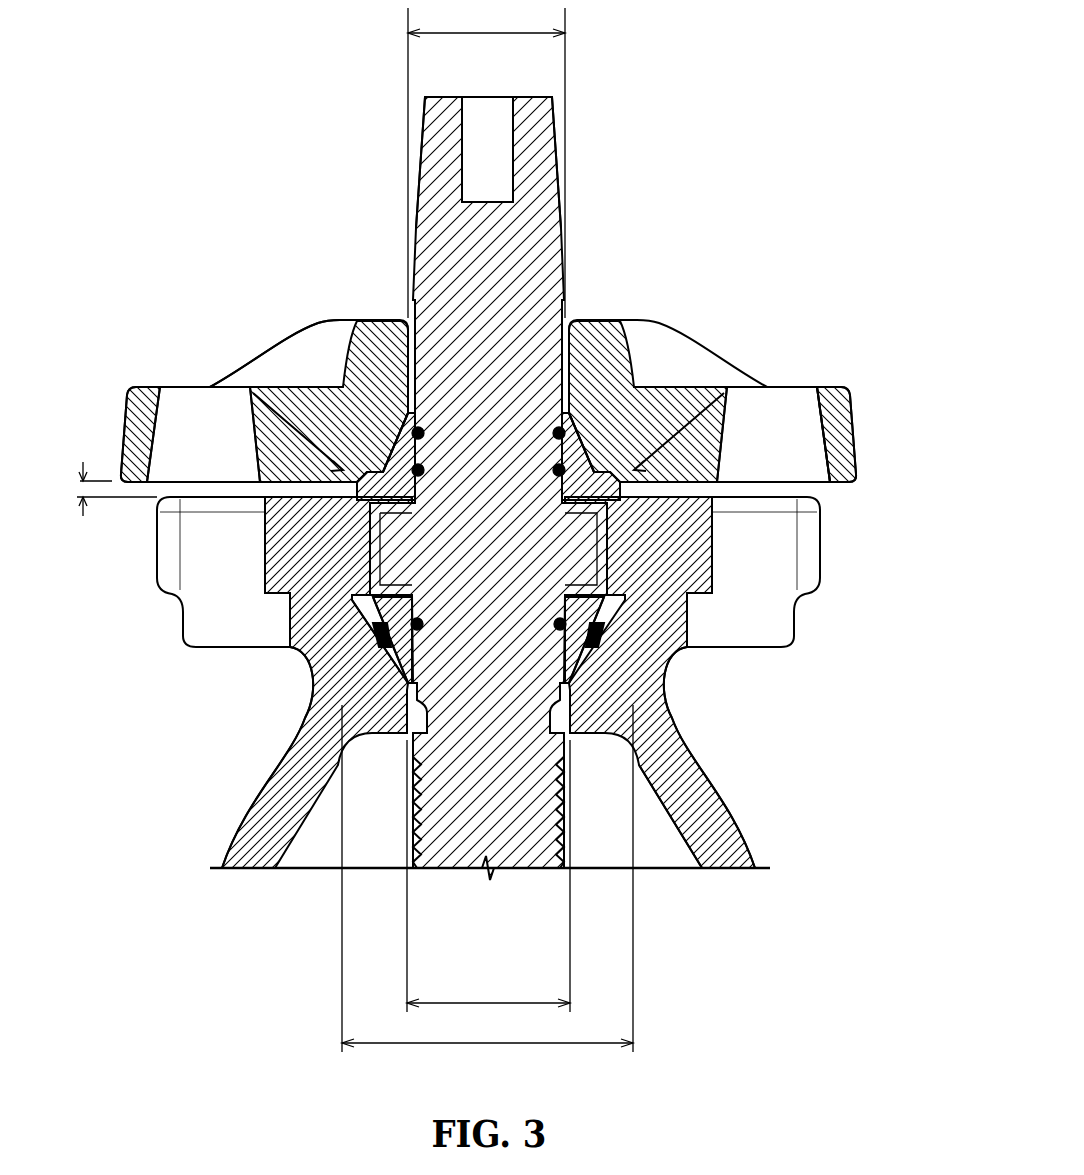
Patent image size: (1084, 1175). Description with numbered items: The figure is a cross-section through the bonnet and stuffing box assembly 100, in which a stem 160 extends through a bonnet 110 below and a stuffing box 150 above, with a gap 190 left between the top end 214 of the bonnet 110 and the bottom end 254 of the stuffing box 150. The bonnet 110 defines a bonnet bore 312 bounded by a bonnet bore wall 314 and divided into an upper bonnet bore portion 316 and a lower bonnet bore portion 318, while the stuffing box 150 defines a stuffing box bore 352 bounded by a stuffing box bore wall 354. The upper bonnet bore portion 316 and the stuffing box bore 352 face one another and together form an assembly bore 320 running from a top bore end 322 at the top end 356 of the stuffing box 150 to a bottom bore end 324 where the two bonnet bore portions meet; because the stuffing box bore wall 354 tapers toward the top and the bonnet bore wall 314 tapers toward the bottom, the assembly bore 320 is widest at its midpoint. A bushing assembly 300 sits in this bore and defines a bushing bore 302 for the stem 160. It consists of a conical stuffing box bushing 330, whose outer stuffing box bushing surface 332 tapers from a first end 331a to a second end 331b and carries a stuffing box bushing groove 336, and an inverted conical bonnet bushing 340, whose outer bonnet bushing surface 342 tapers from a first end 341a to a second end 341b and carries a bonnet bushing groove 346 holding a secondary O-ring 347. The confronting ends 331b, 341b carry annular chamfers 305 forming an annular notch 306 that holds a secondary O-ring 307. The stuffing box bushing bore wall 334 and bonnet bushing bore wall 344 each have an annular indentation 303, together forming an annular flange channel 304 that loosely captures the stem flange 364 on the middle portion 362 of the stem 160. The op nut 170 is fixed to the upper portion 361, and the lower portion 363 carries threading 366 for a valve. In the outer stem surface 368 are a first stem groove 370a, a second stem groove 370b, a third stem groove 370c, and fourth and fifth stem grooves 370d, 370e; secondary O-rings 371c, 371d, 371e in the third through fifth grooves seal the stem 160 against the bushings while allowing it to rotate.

The bonnet and stuffing box assembly 100 is at (783, 151).
The bonnet 110 is at (705, 778).
The stuffing box 150 is at (738, 488).
The stem 160 is at (465, 265).
The op nut 170 is at (545, 155).
The gap 190 is at (88, 490).
The top end 214 is at (195, 497).
The bottom end 254 is at (255, 440).
The bushing assembly 300 is at (760, 387).
The bushing bore 302 is at (625, 590).
The annular indentation 303 is at (345, 493).
The annular flange channel 304 is at (718, 514).
The annular chamfer 305 is at (390, 546).
The annular notch 306 is at (345, 548).
The secondary O-ring 307 is at (600, 560).
The bonnet bore 312 is at (313, 828).
The bonnet bore wall 314 is at (662, 820).
The upper bonnet bore portion 316 is at (805, 598).
The lower bonnet bore portion 318 is at (606, 841).
The assembly bore 320 is at (375, 640).
The top bore end 322 is at (416, 340).
The bottom bore end 324 is at (403, 745).
The stuffing box bushing 330 is at (290, 370).
The first end 331a is at (395, 375).
The second end 331b is at (250, 546).
The outer stuffing box bushing surface 332 is at (235, 380).
The stuffing box bushing bore wall 334 is at (413, 458).
The stuffing box bushing groove 336 is at (330, 350).
The bonnet bushing 340 is at (300, 725).
The first end 341a is at (305, 712).
The second end 341b is at (350, 578).
The outer bonnet bushing surface 342 is at (350, 615).
The bonnet bushing bore wall 344 is at (485, 872).
The bonnet bushing groove 346 is at (600, 680).
The secondary O-ring 347 is at (592, 652).
The stuffing box bore 352 is at (575, 360).
The stuffing box bore wall 354 is at (563, 290).
The top end 356 is at (413, 313).
The upper portion 361 is at (510, 268).
The middle portion 362 is at (832, 405).
The lower portion 363 is at (530, 868).
The stem flange 364 is at (770, 484).
The threading 366 is at (455, 870).
The outer stem surface 368 is at (672, 690).
The first stem groove 370a is at (640, 733).
The second stem groove 370b is at (567, 335).
The third stem groove 370c is at (640, 645).
The fourth stem groove 370d is at (582, 437).
The fifth stem groove 370e is at (612, 468).
The secondary O-ring 371c is at (556, 628).
The secondary O-ring 371d is at (555, 437).
The secondary O-ring 371e is at (556, 466).